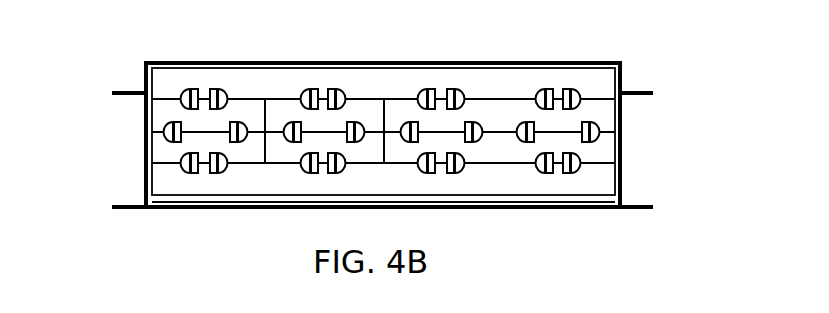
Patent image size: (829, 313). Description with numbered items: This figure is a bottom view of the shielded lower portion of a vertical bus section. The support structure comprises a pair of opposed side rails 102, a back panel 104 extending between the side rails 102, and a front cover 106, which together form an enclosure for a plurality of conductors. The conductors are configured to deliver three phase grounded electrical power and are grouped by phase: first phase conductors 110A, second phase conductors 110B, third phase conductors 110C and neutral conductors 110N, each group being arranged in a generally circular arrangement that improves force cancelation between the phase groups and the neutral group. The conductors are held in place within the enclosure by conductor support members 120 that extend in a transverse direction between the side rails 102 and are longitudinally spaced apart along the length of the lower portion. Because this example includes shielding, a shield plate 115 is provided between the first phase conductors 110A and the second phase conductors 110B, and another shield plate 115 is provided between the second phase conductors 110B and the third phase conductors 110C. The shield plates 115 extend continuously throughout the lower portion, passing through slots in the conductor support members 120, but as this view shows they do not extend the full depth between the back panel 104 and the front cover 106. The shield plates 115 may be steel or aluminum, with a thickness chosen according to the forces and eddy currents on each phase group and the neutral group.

The side rails 102 is at (146, 115).
The back panel 104 is at (565, 209).
The front cover 106 is at (173, 62).
The first phase conductors 110A is at (203, 72).
The second phase conductors 110B is at (333, 72).
The third phase conductors 110C is at (441, 72).
The neutral conductors 110N is at (551, 72).
The shield plate 115 is at (267, 134).
The conductor support members 120 is at (426, 196).